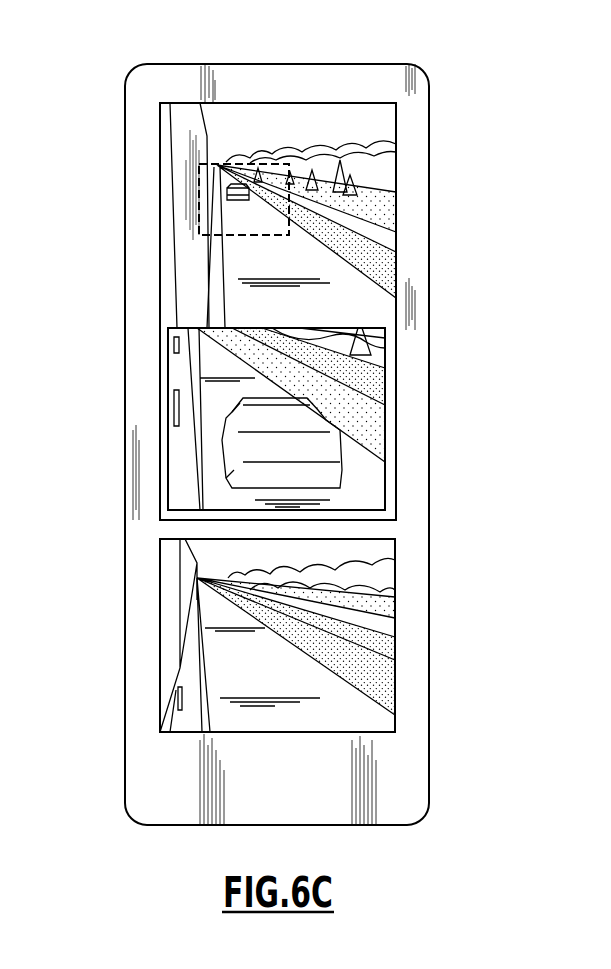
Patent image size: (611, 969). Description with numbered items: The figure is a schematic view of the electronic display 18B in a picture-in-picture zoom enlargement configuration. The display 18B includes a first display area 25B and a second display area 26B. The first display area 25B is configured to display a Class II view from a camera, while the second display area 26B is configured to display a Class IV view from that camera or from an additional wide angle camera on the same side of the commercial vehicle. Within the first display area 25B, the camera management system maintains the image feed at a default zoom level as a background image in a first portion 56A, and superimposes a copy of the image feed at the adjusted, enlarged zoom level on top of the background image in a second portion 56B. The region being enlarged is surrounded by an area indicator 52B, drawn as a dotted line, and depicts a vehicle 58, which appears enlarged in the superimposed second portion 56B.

The electronic display 18B is at (478, 102).
The first display area 25B is at (276, 275).
The second display area 26B is at (373, 722).
The first portion 56A is at (290, 275).
The second portion 56B is at (265, 419).
The area indicator 52B is at (238, 236).
The vehicle 58 is at (320, 475).